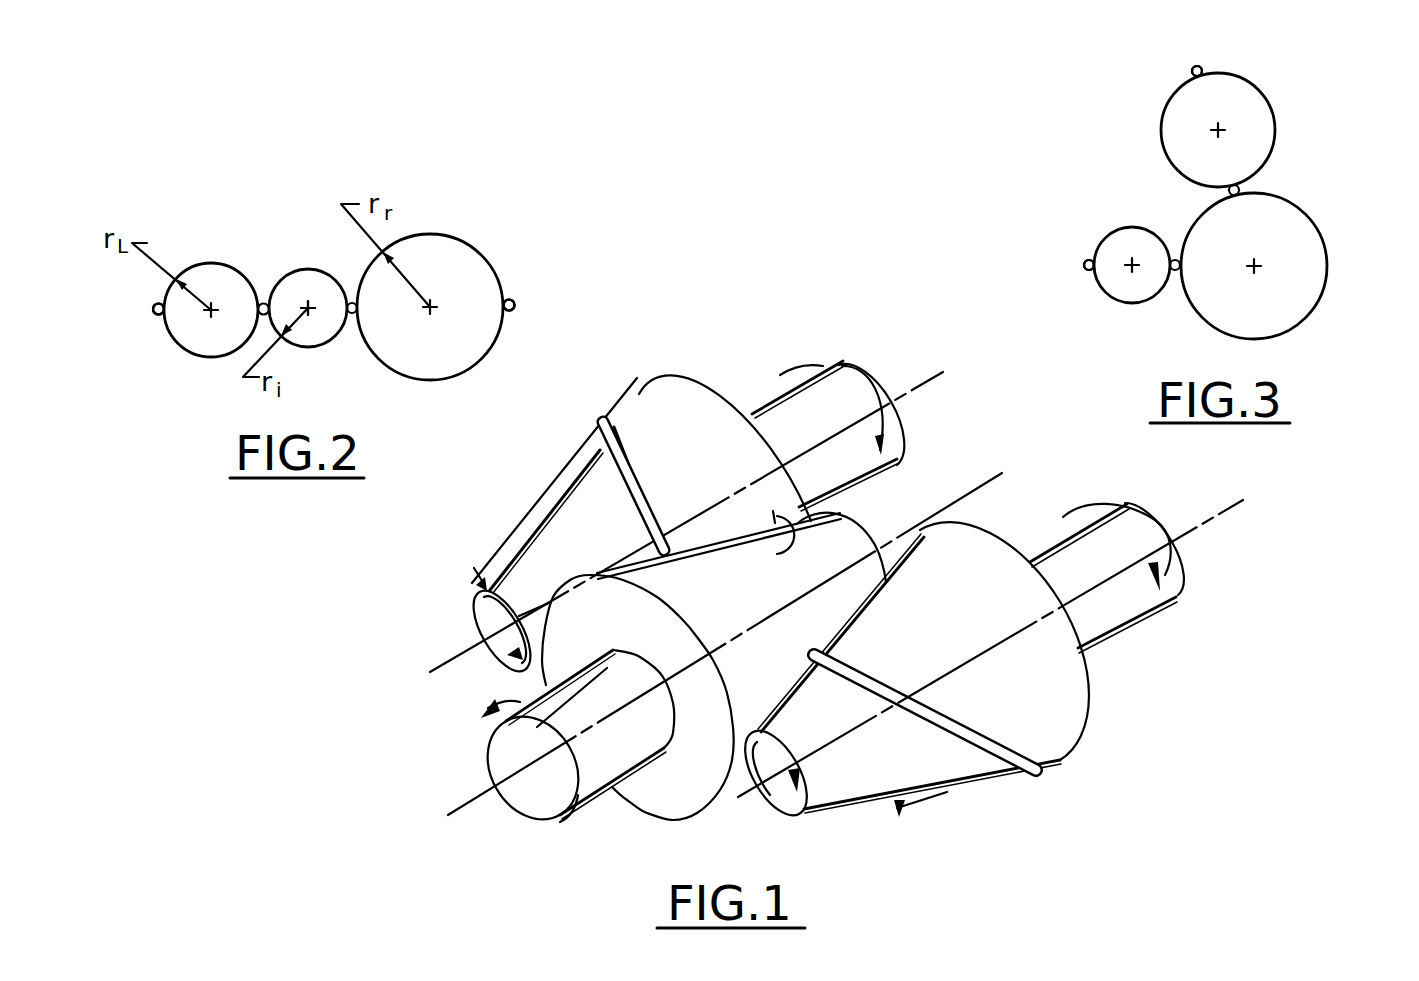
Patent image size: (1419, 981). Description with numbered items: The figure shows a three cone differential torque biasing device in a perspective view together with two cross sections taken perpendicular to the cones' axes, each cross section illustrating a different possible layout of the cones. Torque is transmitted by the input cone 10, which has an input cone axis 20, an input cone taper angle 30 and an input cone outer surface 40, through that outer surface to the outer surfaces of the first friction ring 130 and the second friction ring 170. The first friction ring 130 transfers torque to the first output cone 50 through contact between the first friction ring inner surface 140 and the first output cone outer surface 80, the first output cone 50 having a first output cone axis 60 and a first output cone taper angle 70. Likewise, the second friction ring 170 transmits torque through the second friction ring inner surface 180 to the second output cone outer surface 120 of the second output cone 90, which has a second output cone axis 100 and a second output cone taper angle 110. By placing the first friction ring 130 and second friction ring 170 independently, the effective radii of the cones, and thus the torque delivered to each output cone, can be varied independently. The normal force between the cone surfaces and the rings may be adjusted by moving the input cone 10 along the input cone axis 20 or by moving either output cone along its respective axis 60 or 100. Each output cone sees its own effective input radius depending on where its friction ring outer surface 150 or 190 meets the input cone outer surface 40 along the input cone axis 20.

In FIG. 2, the input cone 10 is at (309, 269).
In FIG. 3, the input cone 10 is at (1313, 210).
In FIG. 1, the input cone 10 is at (642, 808).
In FIG. 2, the input cone axis 20 is at (310, 314).
In FIG. 1, the input cone axis 20 is at (980, 482).
In FIG. 1, the input cone taper angle 30 is at (783, 556).
In FIG. 1, the input cone outer surface 40 is at (850, 540).
In FIG. 2, the first output cone 50 is at (467, 269).
In FIG. 3, the first output cone 50 is at (1279, 130).
In FIG. 1, the first output cone 50 is at (1090, 715).
In FIG. 1, the first output cone axis 60 is at (1203, 528).
In FIG. 1, the first output cone taper angle 70 is at (893, 810).
In FIG. 2, the first output cone outer surface 80 is at (438, 234).
In FIG. 3, the first output cone outer surface 80 is at (1272, 113).
In FIG. 1, the first output cone outer surface 80 is at (1075, 672).
In FIG. 2, the second output cone 90 is at (210, 263).
In FIG. 3, the second output cone 90 is at (1129, 228).
In FIG. 1, the second output cone 90 is at (563, 487).
In FIG. 1, the second output cone axis 100 is at (921, 380).
In FIG. 1, the second output cone taper angle 110 is at (462, 584).
In FIG. 2, the second output cone outer surface 120 is at (206, 257).
In FIG. 3, the second output cone outer surface 120 is at (1104, 226).
In FIG. 1, the second output cone outer surface 120 is at (692, 395).
In FIG. 2, the first friction ring 130 is at (512, 298).
In FIG. 3, the first friction ring 130 is at (1203, 73).
In FIG. 1, the first friction ring 130 is at (1036, 773).
In FIG. 2, the first friction ring inner surface 140 is at (503, 305).
In FIG. 3, the first friction ring inner surface 140 is at (1199, 78).
In FIG. 2, the first friction ring outer surface 150 is at (515, 304).
In FIG. 3, the first friction ring outer surface 150 is at (1192, 69).
In FIG. 2, the second friction ring 170 is at (163, 303).
In FIG. 3, the second friction ring 170 is at (1086, 260).
In FIG. 1, the second friction ring 170 is at (605, 417).
In FIG. 2, the second friction ring inner surface 180 is at (164, 310).
In FIG. 3, the second friction ring inner surface 180 is at (1090, 263).
In FIG. 2, the second friction ring outer surface 190 is at (153, 308).
In FIG. 3, the second friction ring outer surface 190 is at (1082, 265).